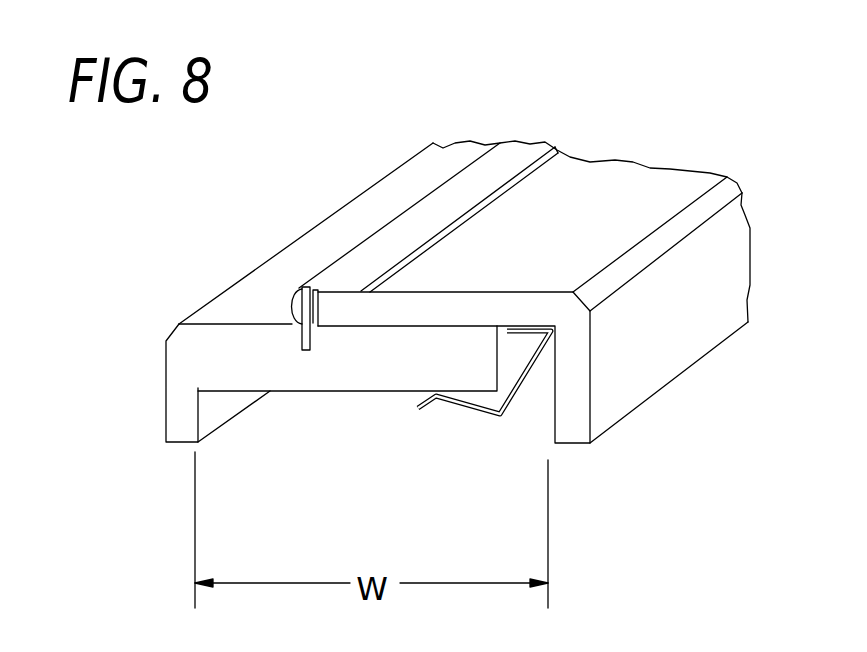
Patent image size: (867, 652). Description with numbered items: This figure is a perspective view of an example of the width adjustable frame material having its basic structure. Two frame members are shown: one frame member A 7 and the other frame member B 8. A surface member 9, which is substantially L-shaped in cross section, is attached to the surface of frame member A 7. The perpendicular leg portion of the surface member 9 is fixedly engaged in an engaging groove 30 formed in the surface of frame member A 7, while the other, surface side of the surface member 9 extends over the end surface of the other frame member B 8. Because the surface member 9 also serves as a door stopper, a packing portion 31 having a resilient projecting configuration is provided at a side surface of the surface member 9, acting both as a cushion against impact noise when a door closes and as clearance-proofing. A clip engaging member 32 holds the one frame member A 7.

The frame member A 7 is at (192, 358).
The frame member B 8 is at (622, 212).
The surface member 9 is at (518, 158).
The engaging groove 30 is at (302, 337).
The packing portion 31 is at (293, 303).
The clip engaging member 32 is at (478, 414).